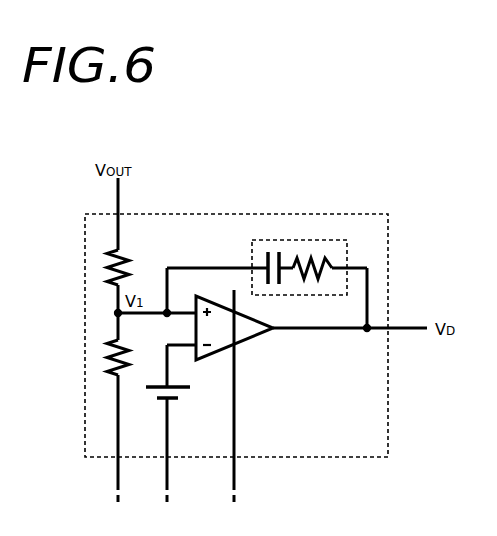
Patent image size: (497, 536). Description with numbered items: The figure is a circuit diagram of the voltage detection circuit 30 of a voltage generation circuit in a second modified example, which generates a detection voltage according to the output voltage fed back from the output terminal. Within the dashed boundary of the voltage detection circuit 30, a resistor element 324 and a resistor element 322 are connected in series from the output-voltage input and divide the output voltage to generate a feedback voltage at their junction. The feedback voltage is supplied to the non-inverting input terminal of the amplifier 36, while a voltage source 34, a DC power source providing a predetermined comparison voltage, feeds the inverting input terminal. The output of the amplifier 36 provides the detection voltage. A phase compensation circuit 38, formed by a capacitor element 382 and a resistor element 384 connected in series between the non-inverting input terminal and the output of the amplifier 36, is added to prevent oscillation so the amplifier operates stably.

The voltage detection circuit 30 is at (207, 214).
The resistor element 324 is at (146, 252).
The resistor element 322 is at (146, 338).
The capacitor element 382 is at (274, 252).
The resistor element 384 is at (325, 262).
The phase compensation circuit 38 is at (356, 232).
The amplifier 36 is at (254, 340).
The voltage source 34 is at (171, 401).